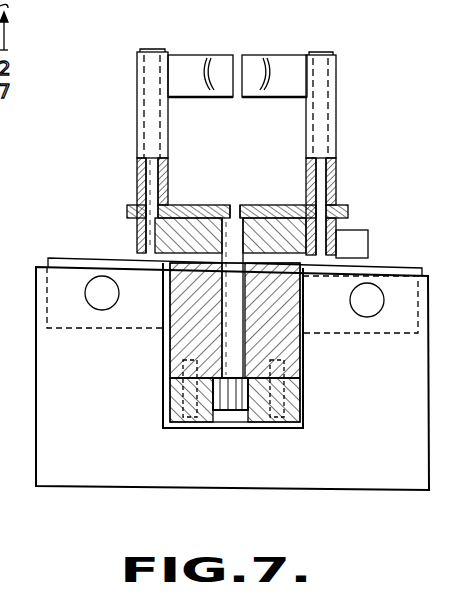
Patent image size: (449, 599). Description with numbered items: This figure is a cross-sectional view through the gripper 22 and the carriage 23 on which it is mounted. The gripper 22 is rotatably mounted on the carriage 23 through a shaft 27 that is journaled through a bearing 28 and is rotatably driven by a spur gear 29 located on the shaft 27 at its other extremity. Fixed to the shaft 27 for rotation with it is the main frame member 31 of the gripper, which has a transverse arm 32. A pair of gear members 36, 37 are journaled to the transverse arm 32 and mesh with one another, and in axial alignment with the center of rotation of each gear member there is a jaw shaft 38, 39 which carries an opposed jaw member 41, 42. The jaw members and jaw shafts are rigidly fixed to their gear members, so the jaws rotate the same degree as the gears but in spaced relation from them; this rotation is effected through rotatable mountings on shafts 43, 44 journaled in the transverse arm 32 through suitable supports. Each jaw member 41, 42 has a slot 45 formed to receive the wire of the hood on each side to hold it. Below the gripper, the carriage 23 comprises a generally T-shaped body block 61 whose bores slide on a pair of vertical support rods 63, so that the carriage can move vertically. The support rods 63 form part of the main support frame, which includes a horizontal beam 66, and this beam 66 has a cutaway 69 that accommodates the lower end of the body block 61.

The gripper 22 is at (344, 161).
The carriage 23 is at (386, 268).
The shaft 27 is at (246, 237).
The bearing 28 is at (245, 312).
The spur gear 29 is at (240, 412).
The main frame member 31 is at (143, 241).
The transverse arm 32 is at (186, 226).
The gear member 36 is at (130, 210).
The gear member 37 is at (346, 210).
The jaw shaft 38 is at (137, 131).
The jaw shaft 39 is at (339, 133).
The jaw member 41 is at (191, 56).
The jaw member 42 is at (288, 56).
The shaft 43 is at (350, 229).
The shaft 44 is at (150, 219).
The slot 45 is at (208, 88).
The body block 61 is at (300, 348).
The vertical support rods 63 is at (110, 297).
The horizontal beam 66 is at (41, 416).
The cutaway 69 is at (165, 350).